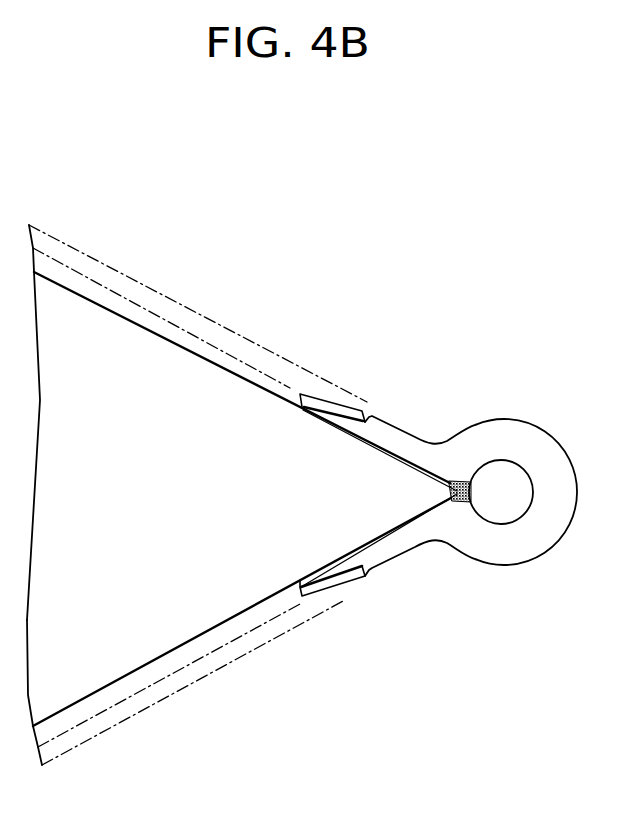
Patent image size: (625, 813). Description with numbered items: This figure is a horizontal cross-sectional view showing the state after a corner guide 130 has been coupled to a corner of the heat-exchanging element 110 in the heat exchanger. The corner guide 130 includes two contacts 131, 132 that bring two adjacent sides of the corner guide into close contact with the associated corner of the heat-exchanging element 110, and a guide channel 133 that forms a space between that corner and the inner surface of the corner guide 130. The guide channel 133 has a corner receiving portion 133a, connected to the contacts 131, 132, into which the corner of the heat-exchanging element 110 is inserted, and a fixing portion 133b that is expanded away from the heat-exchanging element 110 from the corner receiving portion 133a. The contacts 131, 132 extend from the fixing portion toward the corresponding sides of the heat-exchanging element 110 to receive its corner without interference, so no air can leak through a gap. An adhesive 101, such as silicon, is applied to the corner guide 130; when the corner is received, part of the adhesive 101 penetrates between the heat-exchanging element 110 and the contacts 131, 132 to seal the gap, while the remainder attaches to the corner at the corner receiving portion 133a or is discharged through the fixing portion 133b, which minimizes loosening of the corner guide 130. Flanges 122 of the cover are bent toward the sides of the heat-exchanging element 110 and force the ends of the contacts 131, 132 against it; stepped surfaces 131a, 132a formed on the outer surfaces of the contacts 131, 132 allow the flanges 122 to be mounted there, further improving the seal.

The heat-exchanging element 110 is at (232, 372).
The flange 122 is at (210, 673).
The corner guide 130 is at (438, 483).
The contact 131 is at (388, 414).
The stepped surface 131a is at (333, 413).
The contact 132 is at (388, 573).
The stepped surface 132a is at (335, 576).
The guide channel 133 is at (504, 439).
The corner receiving portion 133a is at (474, 478).
The fixing portion 133b is at (528, 462).
The adhesive 101 is at (457, 503).